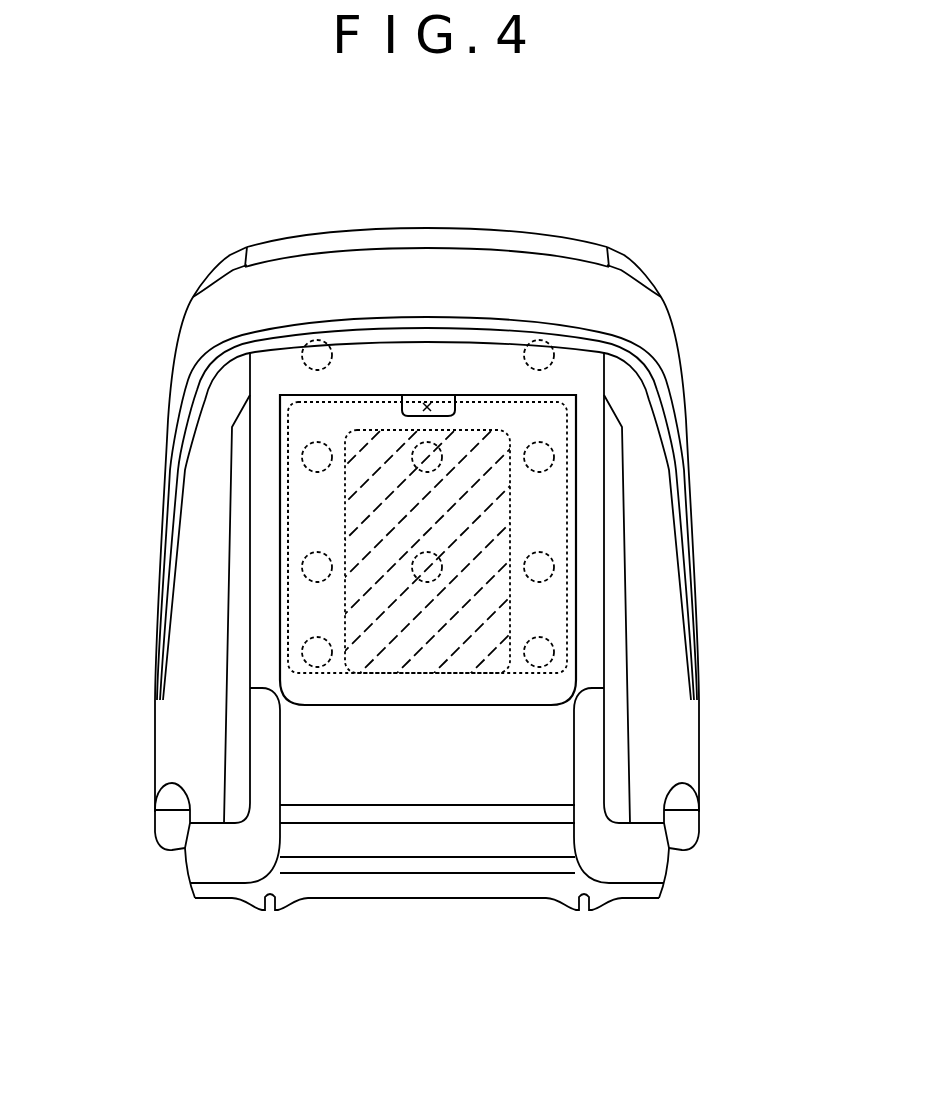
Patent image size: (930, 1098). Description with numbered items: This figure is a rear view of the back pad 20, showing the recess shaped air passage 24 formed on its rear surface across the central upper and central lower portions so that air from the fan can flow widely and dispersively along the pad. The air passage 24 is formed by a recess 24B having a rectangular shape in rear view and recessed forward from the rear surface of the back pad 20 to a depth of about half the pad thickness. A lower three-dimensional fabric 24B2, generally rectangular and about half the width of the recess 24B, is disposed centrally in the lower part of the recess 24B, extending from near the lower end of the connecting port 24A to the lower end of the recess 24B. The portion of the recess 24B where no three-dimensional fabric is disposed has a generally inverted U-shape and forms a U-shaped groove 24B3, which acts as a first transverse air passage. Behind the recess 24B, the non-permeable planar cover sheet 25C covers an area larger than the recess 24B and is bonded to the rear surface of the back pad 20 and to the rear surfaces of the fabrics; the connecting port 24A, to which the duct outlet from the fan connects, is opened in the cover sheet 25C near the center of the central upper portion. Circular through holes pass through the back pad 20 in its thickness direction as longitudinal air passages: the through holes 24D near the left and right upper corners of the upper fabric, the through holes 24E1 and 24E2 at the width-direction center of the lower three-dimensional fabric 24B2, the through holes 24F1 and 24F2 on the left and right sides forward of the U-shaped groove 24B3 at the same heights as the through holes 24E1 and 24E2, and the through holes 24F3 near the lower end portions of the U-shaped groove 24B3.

The back pad 20 is at (182, 252).
The air passage 24 is at (578, 417).
The connecting port 24A is at (427, 394).
The recess 24B is at (567, 607).
The lower three-dimensional fabric 24B2 is at (392, 657).
The U-shaped groove 24B3 is at (323, 610).
The through holes 24D is at (317, 355).
The through hole 24E1 is at (427, 457).
The through hole 24E2 is at (427, 570).
The through holes 24F1 is at (317, 457).
The through holes 24F2 is at (317, 567).
The through holes 24F3 is at (317, 652).
The cover sheet 25C is at (422, 707).